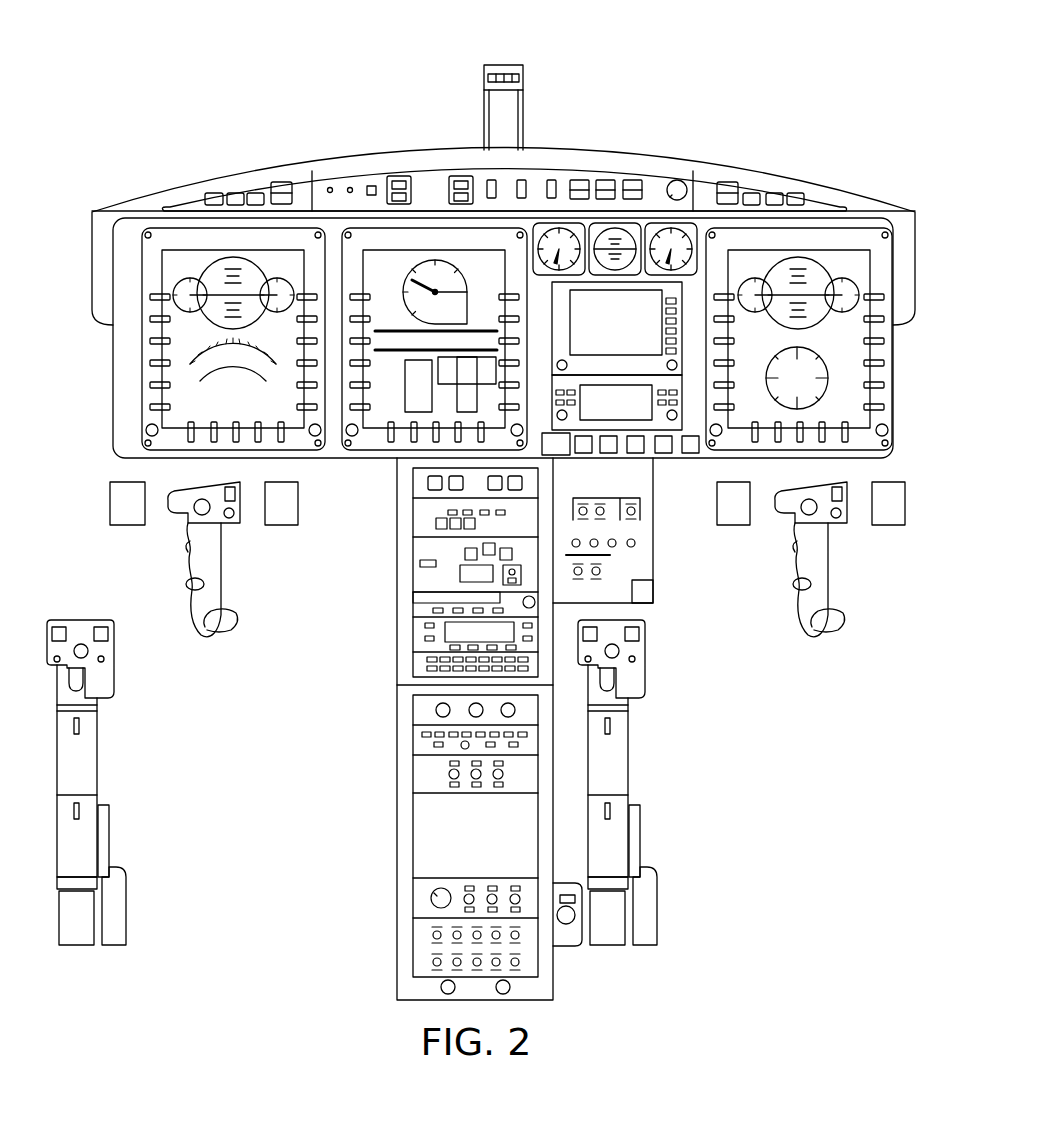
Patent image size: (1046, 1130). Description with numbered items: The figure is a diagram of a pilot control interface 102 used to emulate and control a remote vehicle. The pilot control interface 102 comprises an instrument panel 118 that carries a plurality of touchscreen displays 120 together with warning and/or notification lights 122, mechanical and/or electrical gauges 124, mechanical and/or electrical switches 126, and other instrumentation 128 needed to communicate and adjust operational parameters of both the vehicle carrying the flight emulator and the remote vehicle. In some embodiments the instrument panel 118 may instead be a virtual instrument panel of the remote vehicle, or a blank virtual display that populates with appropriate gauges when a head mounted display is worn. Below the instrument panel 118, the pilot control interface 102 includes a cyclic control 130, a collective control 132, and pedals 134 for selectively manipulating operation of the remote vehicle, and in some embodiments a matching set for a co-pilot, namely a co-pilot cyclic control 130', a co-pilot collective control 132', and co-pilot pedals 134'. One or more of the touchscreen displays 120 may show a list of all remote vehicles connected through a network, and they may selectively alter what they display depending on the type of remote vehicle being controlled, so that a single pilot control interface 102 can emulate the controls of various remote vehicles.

The pilot control interface 102 is at (380, 58).
The instrument panel 118 is at (895, 396).
The touchscreen displays 120 is at (141, 353).
The warning and/or notification lights 122 is at (237, 195).
The mechanical and/or electrical gauges 124 is at (660, 223).
The mechanical and/or electrical switches 126 is at (521, 178).
The other instrumentation 128 is at (403, 634).
The cyclic control 130 is at (785, 559).
The co-pilot cyclic control 130' is at (204, 589).
The collective control 132 is at (641, 782).
The co-pilot collective control 132' is at (111, 782).
The pedals 134 is at (812, 533).
The co-pilot pedals 134' is at (209, 533).